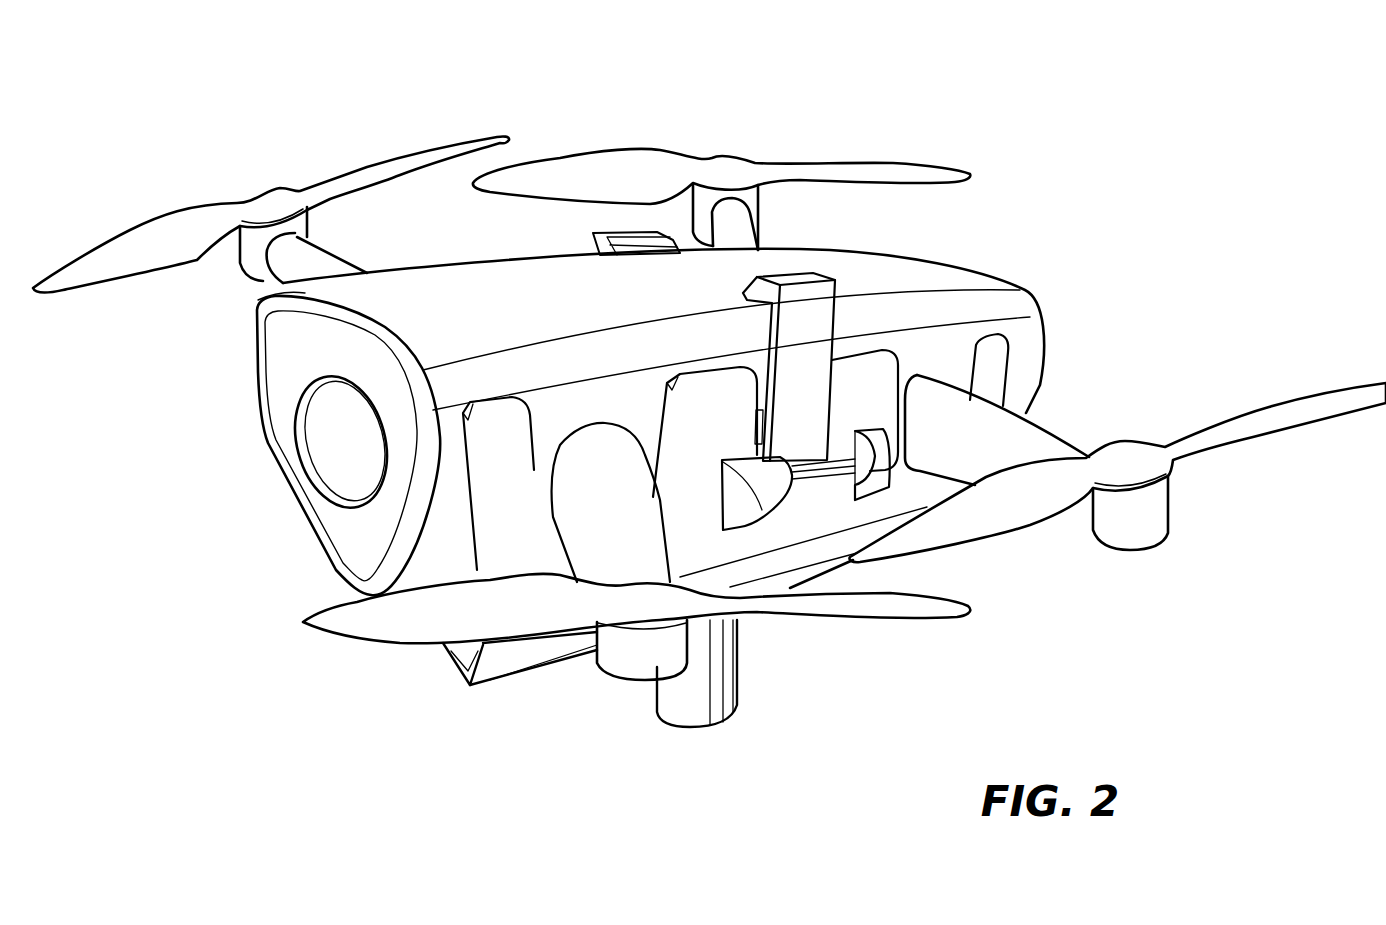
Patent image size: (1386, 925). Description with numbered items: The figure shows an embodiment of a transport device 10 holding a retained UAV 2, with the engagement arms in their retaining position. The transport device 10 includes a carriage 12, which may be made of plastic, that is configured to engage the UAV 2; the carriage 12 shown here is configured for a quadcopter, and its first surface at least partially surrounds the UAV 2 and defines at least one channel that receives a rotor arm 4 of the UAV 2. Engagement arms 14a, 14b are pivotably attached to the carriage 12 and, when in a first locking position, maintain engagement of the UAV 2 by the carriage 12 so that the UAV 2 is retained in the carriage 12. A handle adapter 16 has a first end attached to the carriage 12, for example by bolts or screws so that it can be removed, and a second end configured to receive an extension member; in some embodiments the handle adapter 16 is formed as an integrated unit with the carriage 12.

The transport device 10 is at (709, 411).
The UAV 2 is at (278, 371).
The rotor arm 4 is at (313, 260).
The carriage 12 is at (508, 673).
The engagement arm 14a is at (592, 241).
The engagement arm 14b is at (813, 312).
The handle adapter 16 is at (718, 688).